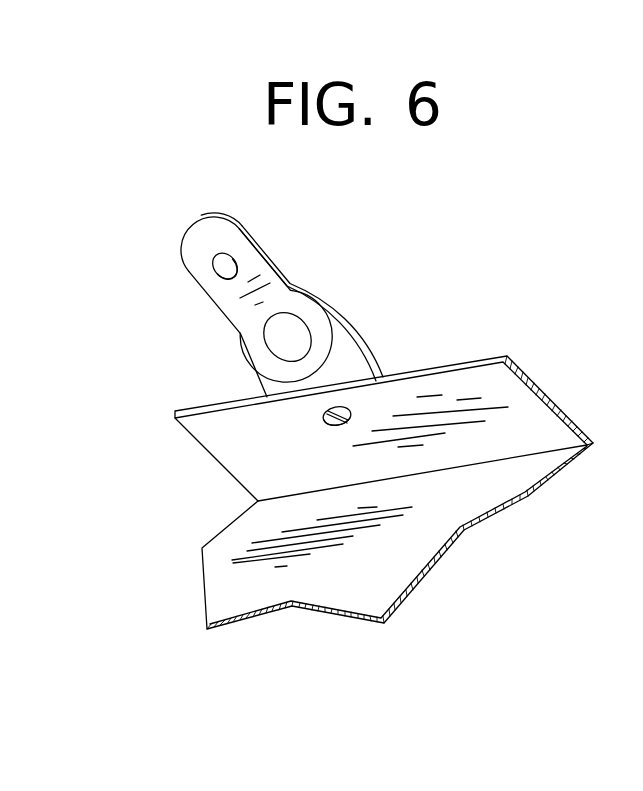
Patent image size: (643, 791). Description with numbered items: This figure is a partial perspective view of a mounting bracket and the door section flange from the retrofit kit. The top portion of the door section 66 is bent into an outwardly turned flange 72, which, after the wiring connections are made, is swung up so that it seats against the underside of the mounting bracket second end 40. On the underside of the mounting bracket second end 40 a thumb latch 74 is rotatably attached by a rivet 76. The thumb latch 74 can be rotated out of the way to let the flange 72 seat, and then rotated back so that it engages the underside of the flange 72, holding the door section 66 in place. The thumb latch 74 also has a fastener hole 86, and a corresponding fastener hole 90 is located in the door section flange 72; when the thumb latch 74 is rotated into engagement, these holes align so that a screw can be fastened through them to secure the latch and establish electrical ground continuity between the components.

The thumb latch 74 is at (258, 267).
The fastener hole 86 is at (224, 266).
The rivet 76 is at (293, 334).
The mounting bracket second end 40 is at (381, 366).
The outwardly turned flange 72 is at (246, 435).
The fastener hole 90 is at (328, 427).
The door section 66 is at (358, 550).